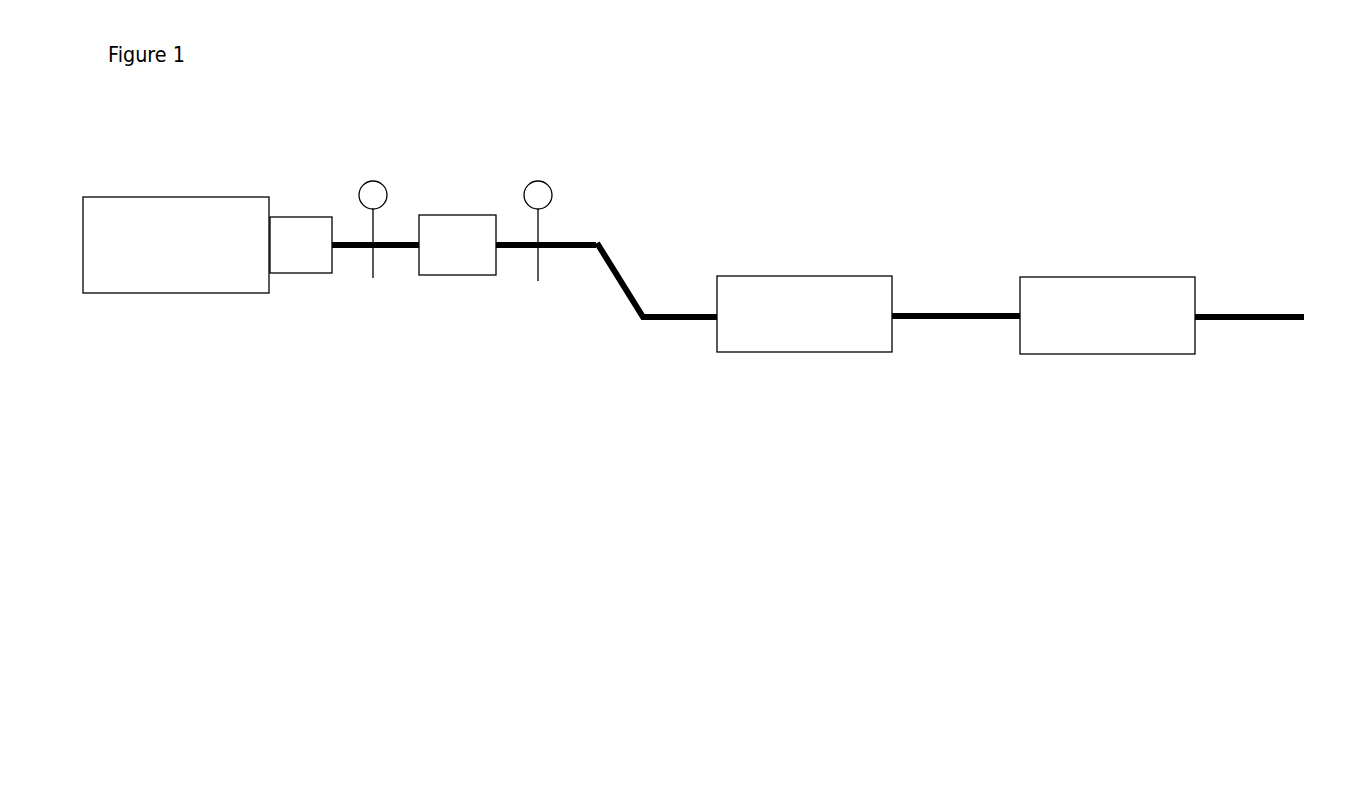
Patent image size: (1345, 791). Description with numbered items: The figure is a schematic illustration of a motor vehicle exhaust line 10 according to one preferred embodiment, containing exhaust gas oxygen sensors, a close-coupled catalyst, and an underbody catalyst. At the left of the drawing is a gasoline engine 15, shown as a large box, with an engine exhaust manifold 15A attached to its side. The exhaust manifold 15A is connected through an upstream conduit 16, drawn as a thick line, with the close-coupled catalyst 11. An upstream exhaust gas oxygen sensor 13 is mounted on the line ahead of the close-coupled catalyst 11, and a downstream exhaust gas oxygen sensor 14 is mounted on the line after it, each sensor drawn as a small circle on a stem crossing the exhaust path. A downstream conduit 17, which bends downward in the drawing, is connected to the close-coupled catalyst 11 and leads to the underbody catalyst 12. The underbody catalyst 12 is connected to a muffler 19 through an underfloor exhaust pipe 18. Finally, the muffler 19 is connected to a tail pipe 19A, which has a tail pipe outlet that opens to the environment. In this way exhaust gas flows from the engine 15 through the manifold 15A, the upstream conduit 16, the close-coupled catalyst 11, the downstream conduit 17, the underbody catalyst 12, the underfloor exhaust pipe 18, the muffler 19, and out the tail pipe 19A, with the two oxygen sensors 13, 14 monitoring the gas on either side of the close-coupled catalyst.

The motor vehicle exhaust line 10 is at (754, 173).
The close-coupled catalyst 11 is at (453, 277).
The underbody catalyst 12 is at (790, 355).
The upstream exhaust gas oxygen sensor 13 is at (384, 181).
The downstream exhaust gas oxygen sensor 14 is at (549, 181).
The gasoline engine 15 is at (163, 278).
The engine exhaust manifold 15A is at (312, 268).
The upstream conduit 16 is at (356, 249).
The downstream conduit 17 is at (656, 323).
The underfloor exhaust pipe 18 is at (938, 321).
The muffler 19 is at (1078, 357).
The tail pipe 19A is at (1250, 321).